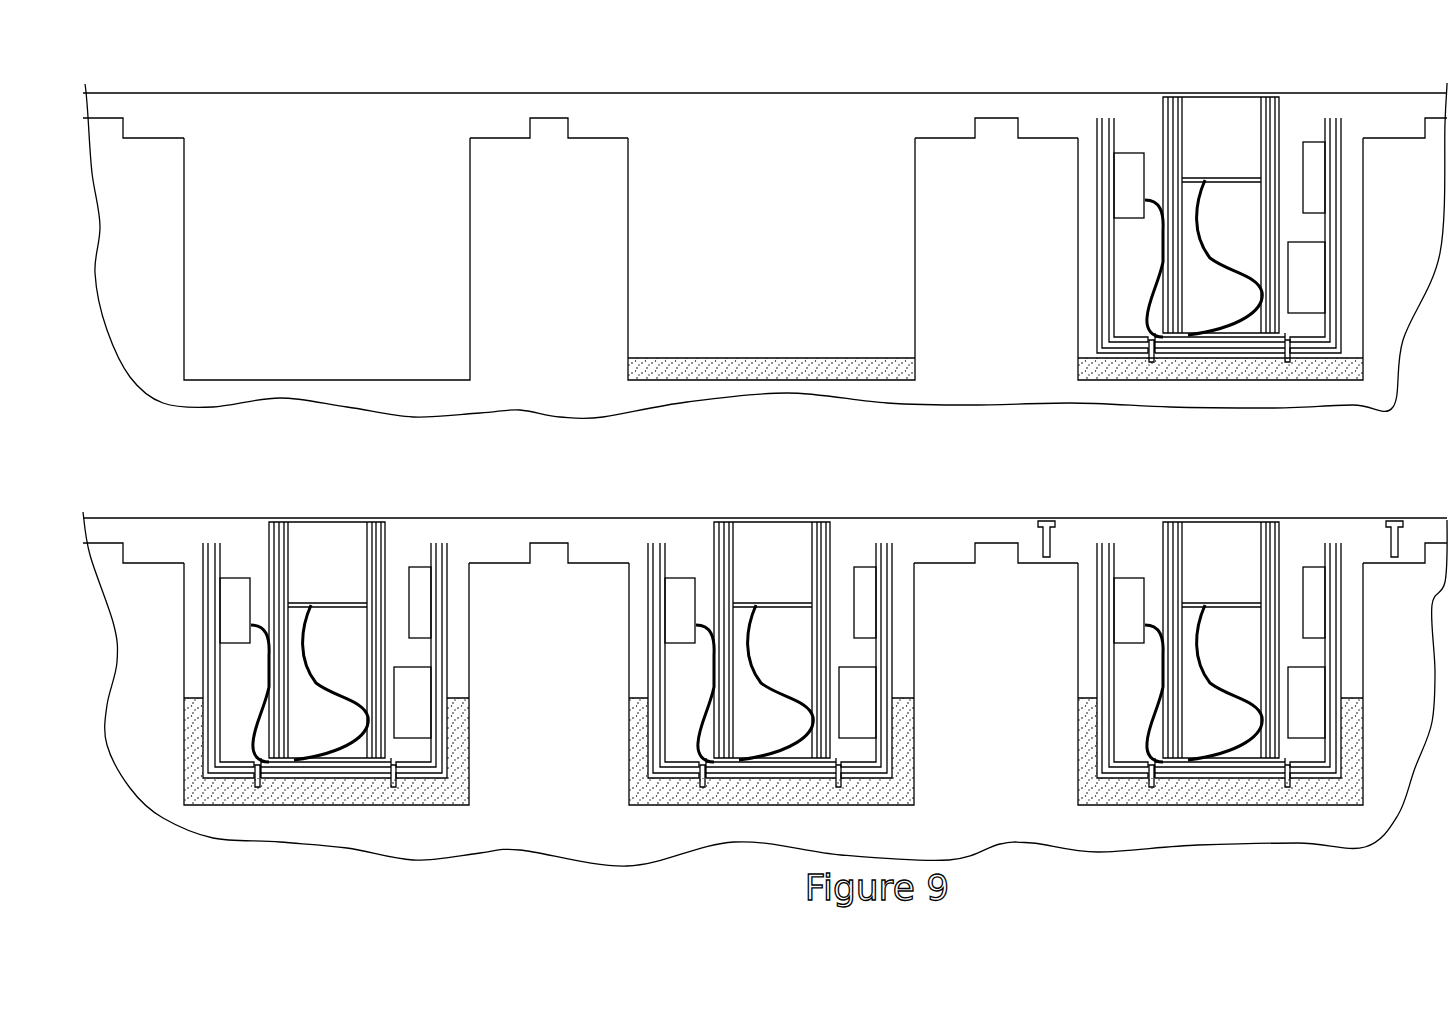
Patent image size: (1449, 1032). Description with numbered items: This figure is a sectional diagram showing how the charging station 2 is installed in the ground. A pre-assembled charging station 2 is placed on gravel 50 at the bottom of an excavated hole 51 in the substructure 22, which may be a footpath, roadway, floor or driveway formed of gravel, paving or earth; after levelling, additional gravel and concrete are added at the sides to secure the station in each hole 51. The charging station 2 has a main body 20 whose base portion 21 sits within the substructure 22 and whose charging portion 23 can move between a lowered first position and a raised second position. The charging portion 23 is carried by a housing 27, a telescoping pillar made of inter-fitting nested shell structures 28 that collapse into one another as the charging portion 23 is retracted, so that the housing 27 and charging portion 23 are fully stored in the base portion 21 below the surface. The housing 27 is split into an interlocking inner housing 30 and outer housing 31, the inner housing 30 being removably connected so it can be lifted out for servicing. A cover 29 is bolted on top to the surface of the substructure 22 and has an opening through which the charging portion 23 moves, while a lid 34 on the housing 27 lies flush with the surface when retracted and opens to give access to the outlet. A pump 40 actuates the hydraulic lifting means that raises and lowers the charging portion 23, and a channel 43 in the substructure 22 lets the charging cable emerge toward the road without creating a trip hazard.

The charging station 2 is at (1047, 185).
The main body 20 is at (1127, 300).
The base portion 21 is at (898, 632).
The substructure 22 is at (523, 287).
The charging portion 23 is at (1198, 127).
The housing 27 is at (1347, 222).
The nested shell structures 28 is at (1276, 178).
The cover 29 is at (1365, 105).
The inner housing 30 is at (1332, 323).
The outer housing 31 is at (1342, 270).
The lid 34 is at (1205, 94).
The pump 40 is at (1123, 200).
The channel 43 is at (462, 740).
The gravel 50 is at (743, 365).
The excavated hole 51 is at (313, 140).